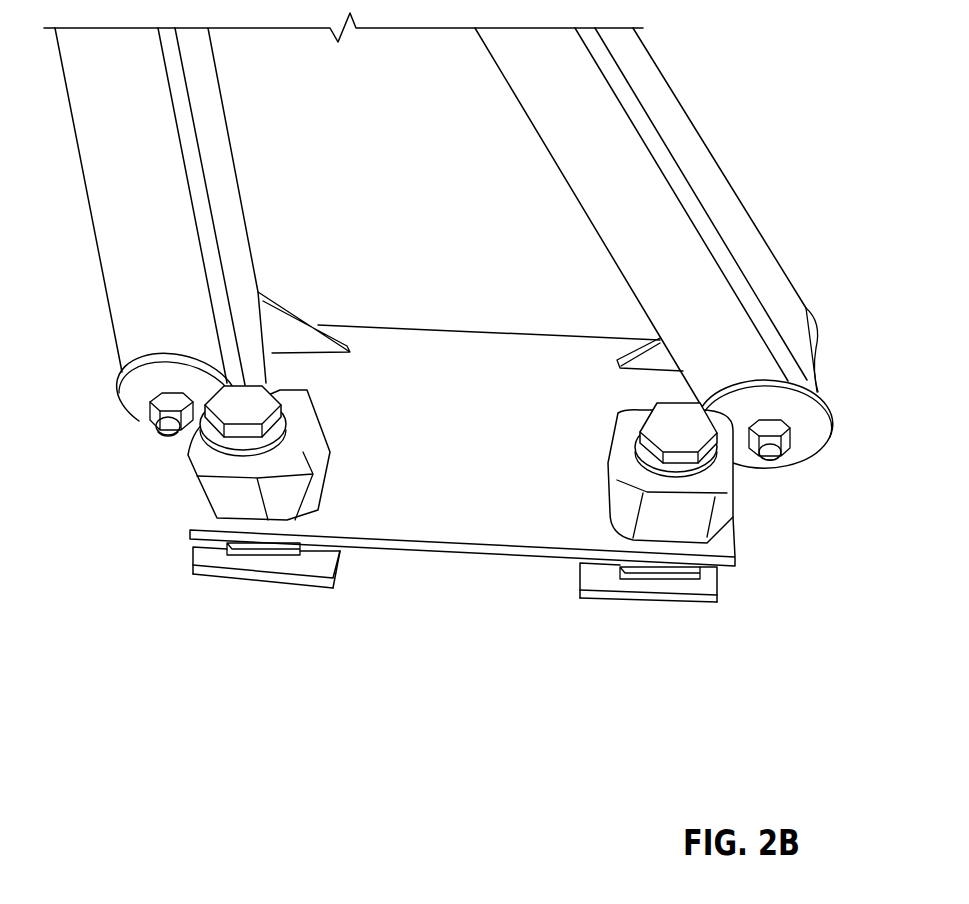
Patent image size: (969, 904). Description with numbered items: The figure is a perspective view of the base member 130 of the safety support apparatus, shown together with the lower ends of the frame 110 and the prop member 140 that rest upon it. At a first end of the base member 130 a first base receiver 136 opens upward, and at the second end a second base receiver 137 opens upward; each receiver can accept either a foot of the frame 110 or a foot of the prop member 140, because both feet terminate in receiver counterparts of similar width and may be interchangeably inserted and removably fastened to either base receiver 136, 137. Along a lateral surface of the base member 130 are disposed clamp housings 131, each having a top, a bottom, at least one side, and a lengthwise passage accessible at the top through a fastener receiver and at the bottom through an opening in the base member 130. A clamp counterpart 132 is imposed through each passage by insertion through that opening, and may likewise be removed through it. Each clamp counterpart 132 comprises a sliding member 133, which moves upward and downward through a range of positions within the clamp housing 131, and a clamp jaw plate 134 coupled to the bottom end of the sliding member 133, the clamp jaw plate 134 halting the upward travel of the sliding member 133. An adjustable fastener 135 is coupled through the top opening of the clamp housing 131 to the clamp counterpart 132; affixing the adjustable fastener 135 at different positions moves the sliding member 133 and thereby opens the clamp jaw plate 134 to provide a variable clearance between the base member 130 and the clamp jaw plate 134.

The frame 110 is at (263, 155).
The prop member 140 is at (657, 161).
The base member 130 is at (462, 308).
The clamp housing 131 is at (307, 456).
The clamp counterpart 132 is at (162, 582).
The sliding member 133 is at (296, 549).
The clamp jaw plate 134 is at (257, 578).
The adjustable fastener 135 is at (252, 405).
The first base receiver 136 is at (121, 383).
The second base receiver 137 is at (816, 348).